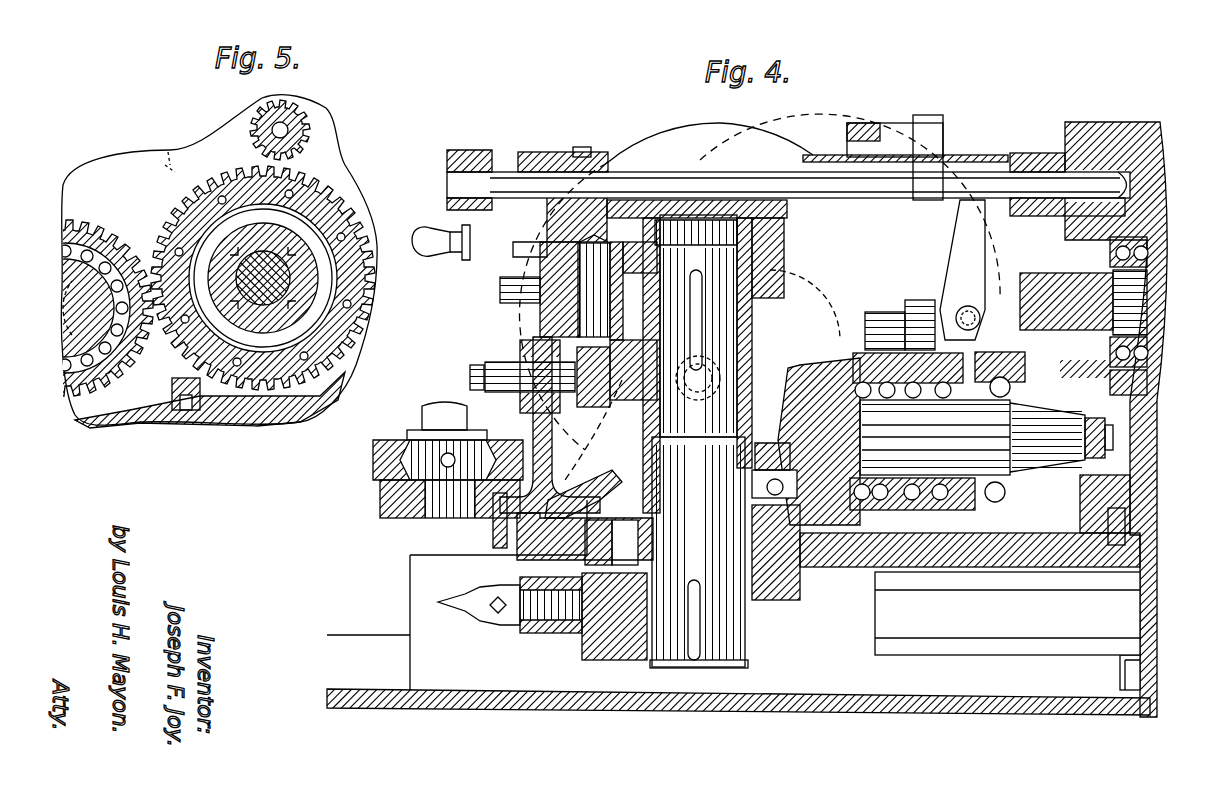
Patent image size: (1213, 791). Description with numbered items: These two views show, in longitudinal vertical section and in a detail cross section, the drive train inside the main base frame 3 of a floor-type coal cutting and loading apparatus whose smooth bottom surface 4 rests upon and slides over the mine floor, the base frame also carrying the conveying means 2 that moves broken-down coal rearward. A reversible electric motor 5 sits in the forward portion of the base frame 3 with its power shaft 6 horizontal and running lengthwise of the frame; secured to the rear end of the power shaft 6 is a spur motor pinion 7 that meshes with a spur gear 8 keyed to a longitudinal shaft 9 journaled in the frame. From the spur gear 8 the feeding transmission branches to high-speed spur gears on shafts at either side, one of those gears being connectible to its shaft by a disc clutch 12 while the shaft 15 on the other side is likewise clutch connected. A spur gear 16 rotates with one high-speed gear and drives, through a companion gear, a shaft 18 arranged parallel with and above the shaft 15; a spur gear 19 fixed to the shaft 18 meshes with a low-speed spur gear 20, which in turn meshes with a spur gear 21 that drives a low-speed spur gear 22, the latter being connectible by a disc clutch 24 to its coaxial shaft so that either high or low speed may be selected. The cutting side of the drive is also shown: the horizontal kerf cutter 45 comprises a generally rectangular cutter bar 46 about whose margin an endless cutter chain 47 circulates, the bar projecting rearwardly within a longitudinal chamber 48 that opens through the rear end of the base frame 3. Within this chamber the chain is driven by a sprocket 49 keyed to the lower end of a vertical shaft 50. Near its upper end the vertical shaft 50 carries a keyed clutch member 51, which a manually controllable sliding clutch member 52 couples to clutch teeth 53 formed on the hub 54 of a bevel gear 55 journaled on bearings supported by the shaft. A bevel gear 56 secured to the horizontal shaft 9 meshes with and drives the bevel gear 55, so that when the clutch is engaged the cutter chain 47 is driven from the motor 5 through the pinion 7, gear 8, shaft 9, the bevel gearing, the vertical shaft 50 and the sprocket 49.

In FIG. 4, the conveying means 2 is at (788, 165).
In FIG. 5, the main base frame 3 is at (326, 162).
In FIG. 4, the main base frame 3 is at (410, 600).
In FIG. 4, the smooth bottom surface 4 is at (515, 712).
In FIG. 4, the motor 5 is at (1150, 130).
In FIG. 4, the power shaft 6 is at (1138, 300).
In FIG. 4, the spur motor pinion 7 is at (1068, 290).
In FIG. 4, the spur gear 8 is at (1052, 540).
In FIG. 5, the longitudinal shaft 9 is at (78, 330).
In FIG. 4, the longitudinal shaft 9 is at (1075, 460).
In FIG. 5, the disc clutch 12 is at (168, 152).
In FIG. 5, the shaft 15 is at (268, 284).
In FIG. 5, the spur gear 16 is at (280, 290).
In FIG. 5, the shaft 18 is at (306, 128).
In FIG. 5, the spur gear 19 is at (292, 115).
In FIG. 5, the spur gear 20 is at (345, 338).
In FIG. 5, the spur gear 21 is at (100, 235).
In FIG. 4, the spur gear 21 is at (905, 510).
In FIG. 4, the spur gear 22 is at (918, 300).
In FIG. 4, the disc clutch 24 is at (882, 318).
In FIG. 4, the kerf cutter 45 is at (1110, 662).
In FIG. 4, the cutter bar 46 is at (1050, 650).
In FIG. 4, the cutter chain 47 is at (555, 633).
In FIG. 4, the longitudinal chamber 48 is at (815, 700).
In FIG. 4, the sprocket 49 is at (622, 635).
In FIG. 4, the vertical shaft 50 is at (690, 640).
In FIG. 4, the clutch member 51 is at (780, 322).
In FIG. 4, the sliding clutch member 52 is at (760, 378).
In FIG. 4, the clutch teeth 53 is at (782, 418).
In FIG. 4, the hub 54 is at (655, 420).
In FIG. 4, the bevel gear 55 is at (560, 490).
In FIG. 4, the bevel gear 56 is at (835, 370).